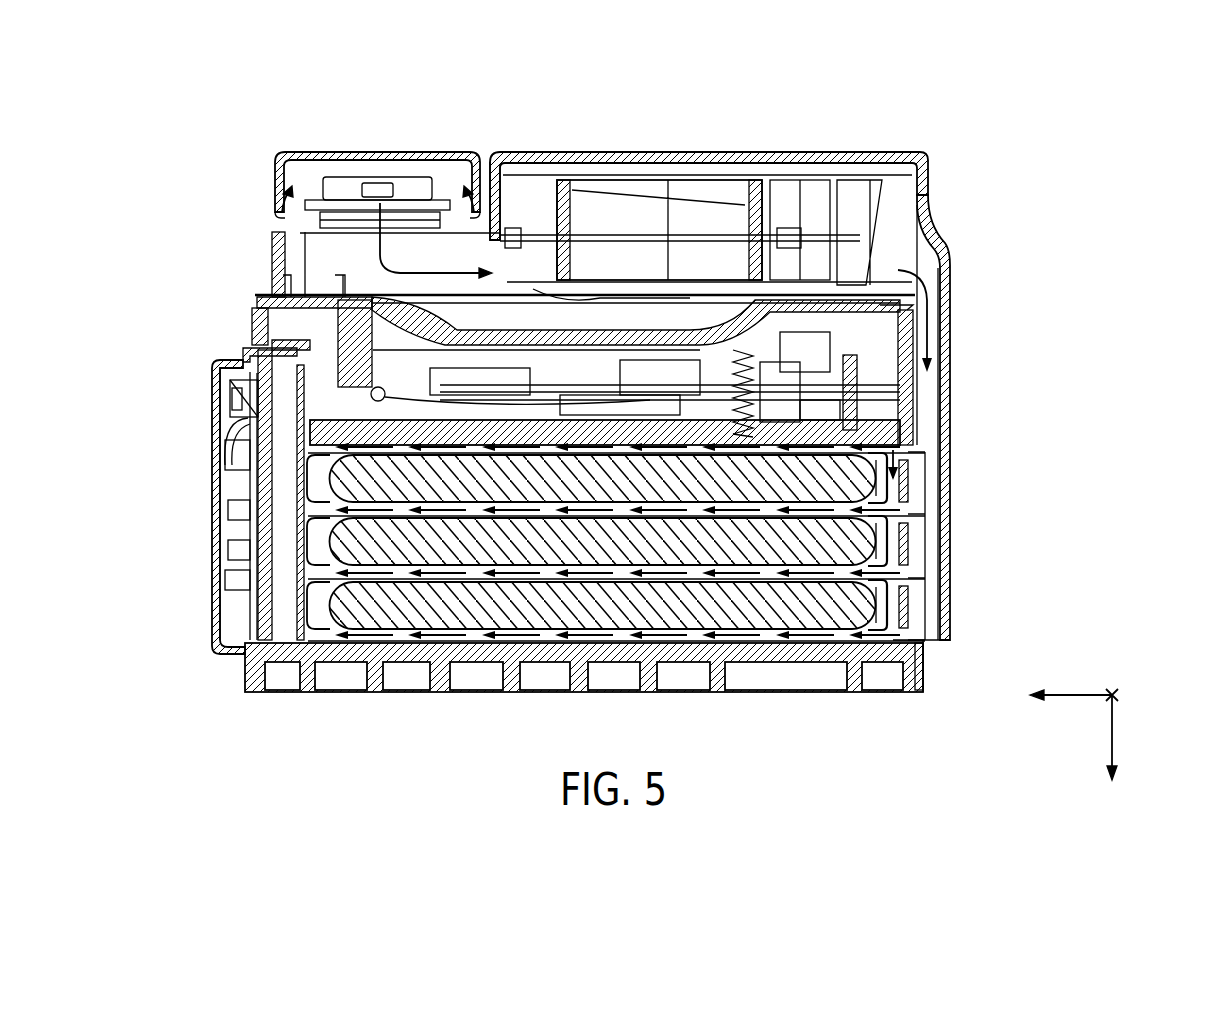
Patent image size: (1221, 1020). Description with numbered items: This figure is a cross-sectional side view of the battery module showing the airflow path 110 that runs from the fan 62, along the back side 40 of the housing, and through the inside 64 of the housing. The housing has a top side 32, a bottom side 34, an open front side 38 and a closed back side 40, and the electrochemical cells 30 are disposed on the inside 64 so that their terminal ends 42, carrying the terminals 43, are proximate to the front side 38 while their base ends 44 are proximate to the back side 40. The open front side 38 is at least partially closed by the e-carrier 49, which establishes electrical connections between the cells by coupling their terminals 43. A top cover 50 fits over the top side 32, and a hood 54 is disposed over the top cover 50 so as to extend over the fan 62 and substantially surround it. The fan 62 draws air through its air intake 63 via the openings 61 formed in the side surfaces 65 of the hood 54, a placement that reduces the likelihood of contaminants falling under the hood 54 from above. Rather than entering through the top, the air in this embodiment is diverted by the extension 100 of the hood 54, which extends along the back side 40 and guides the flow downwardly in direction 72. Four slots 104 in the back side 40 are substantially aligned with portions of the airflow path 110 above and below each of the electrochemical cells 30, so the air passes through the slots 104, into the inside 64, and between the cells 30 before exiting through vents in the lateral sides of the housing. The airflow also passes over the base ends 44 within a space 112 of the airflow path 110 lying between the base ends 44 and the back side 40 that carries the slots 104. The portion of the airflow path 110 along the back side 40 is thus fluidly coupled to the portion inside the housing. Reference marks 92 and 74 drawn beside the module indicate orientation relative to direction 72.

The electrochemical cells 30 is at (624, 492).
The top side 32 is at (328, 432).
The bottom side 34 is at (607, 692).
The front side 38 is at (305, 480).
The back side 40 is at (906, 400).
The terminal ends 42 is at (330, 473).
The terminals 43 is at (307, 605).
The base ends 44 is at (893, 437).
The e-carrier 49 is at (220, 366).
The top cover 50 is at (218, 530).
The hood 54 is at (748, 96).
The openings 61 is at (280, 208).
The fan 62 is at (720, 212).
The air intake 63 is at (497, 255).
The inside 64 is at (470, 641).
The side surfaces 65 is at (260, 204).
The direction 72 is at (1110, 745).
The reference point 74 is at (1120, 692).
The horizontal direction 92 is at (1077, 695).
The extension 100 is at (946, 330).
The slots 104 is at (912, 513).
The airflow path 110 is at (930, 256).
The space 112 is at (876, 476).